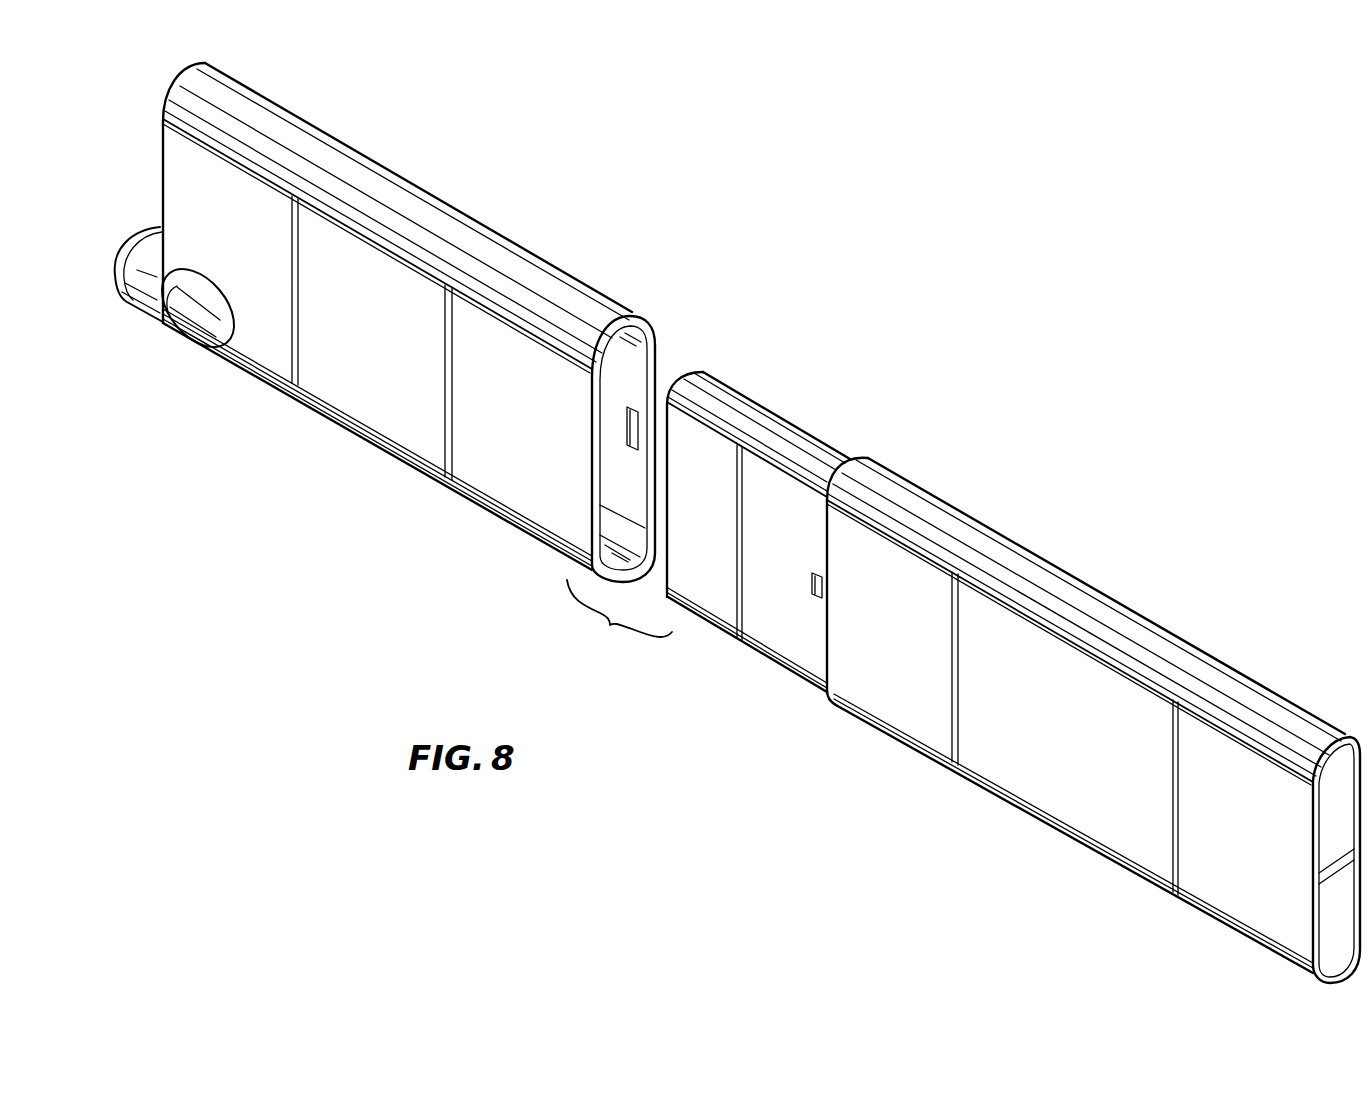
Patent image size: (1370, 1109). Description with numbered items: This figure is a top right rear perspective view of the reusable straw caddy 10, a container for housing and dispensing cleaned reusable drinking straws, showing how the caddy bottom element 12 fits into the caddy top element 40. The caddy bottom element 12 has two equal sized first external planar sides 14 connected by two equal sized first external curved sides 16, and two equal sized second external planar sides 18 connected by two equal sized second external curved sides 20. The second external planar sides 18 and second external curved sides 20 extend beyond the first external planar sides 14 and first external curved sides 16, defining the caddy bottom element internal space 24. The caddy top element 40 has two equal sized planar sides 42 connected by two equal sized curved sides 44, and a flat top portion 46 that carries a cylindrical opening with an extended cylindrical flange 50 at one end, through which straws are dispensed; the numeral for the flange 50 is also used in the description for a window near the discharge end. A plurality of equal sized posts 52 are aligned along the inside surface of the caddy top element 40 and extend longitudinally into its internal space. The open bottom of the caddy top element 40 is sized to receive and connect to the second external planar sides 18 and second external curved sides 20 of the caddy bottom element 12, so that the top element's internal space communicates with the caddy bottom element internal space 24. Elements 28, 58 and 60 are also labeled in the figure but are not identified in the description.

The reusable straw caddy 10 is at (967, 307).
The caddy bottom element 12 is at (1082, 793).
The first external planar sides 14 is at (1013, 742).
The first external curved sides 16 is at (1087, 597).
The second external planar sides 18 is at (720, 598).
The second external curved sides 20 is at (760, 413).
The caddy bottom element internal space 24 is at (633, 330).
The connector contact 28 is at (812, 590).
The caddy top element 40 is at (372, 402).
The planar sides 42 is at (300, 345).
The curved sides 44 is at (387, 182).
The flat top portion 46 is at (164, 175).
The extended cylindrical flange 50 is at (148, 303).
The posts 52 is at (197, 277).
The connector slot 58 is at (631, 424).
The inner wall of aperture 60 is at (213, 323).